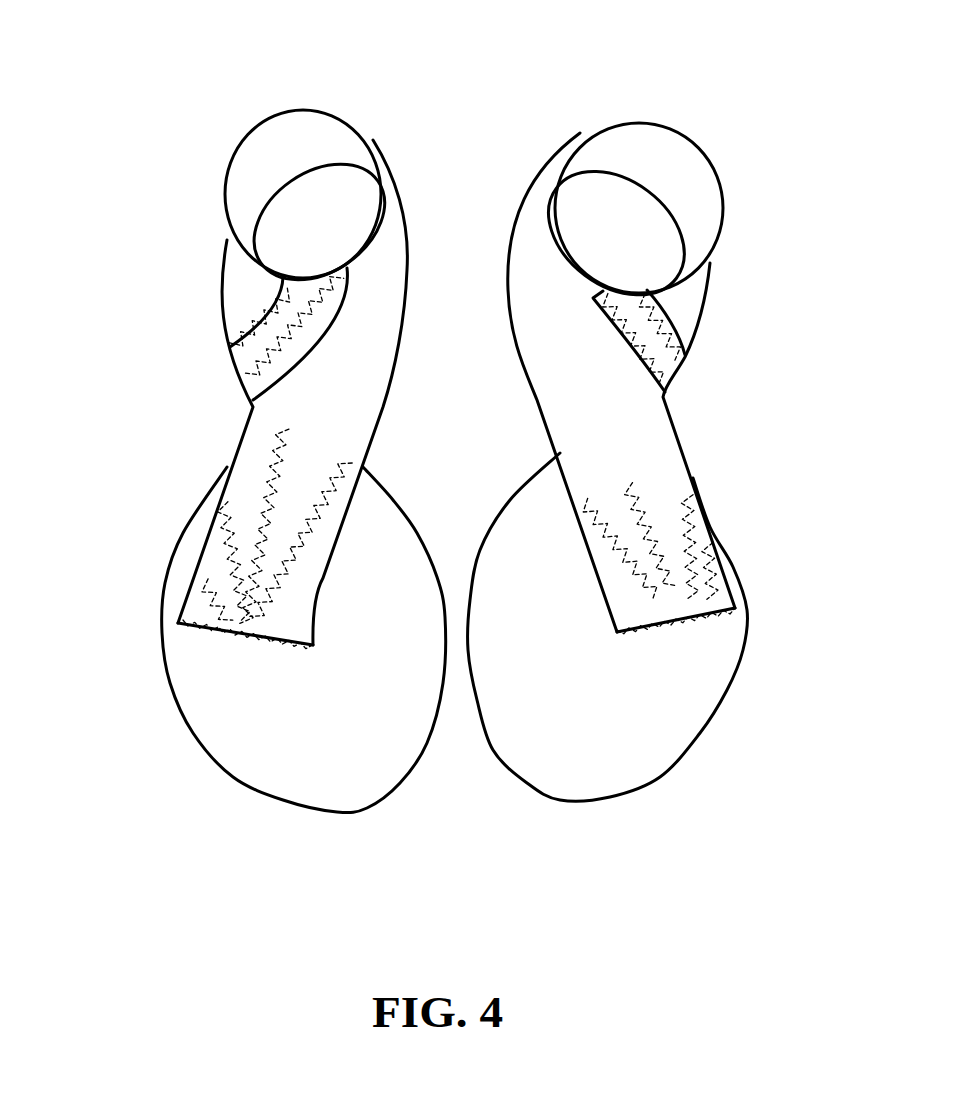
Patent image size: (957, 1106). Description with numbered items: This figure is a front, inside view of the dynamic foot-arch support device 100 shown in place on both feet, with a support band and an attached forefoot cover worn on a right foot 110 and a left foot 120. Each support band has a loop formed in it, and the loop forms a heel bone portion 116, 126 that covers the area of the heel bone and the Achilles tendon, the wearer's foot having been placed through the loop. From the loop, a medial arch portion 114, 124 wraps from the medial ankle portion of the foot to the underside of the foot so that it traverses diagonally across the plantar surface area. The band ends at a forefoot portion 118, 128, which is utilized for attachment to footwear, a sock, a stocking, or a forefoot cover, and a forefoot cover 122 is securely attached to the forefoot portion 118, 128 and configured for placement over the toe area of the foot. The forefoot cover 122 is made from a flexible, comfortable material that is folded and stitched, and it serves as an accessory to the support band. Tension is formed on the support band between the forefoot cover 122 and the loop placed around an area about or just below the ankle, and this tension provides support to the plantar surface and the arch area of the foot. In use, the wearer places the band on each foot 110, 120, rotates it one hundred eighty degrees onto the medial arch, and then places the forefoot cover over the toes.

The dynamic foot-arch support device 100 is at (476, 85).
The right foot 110 is at (120, 508).
The medial arch portion 114 is at (378, 413).
The heel bone portion 116 is at (266, 141).
The forefoot portion 118 is at (195, 607).
The left foot 120 is at (802, 514).
The forefoot cover 122 is at (642, 777).
The medial arch portion 124 is at (547, 407).
The heel bone portion 126 is at (675, 152).
The forefoot portion 128 is at (708, 590).